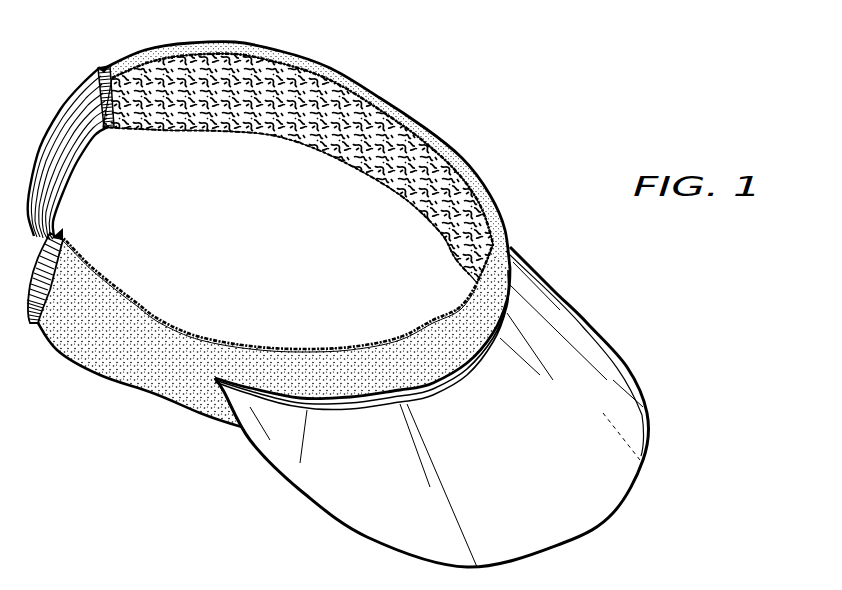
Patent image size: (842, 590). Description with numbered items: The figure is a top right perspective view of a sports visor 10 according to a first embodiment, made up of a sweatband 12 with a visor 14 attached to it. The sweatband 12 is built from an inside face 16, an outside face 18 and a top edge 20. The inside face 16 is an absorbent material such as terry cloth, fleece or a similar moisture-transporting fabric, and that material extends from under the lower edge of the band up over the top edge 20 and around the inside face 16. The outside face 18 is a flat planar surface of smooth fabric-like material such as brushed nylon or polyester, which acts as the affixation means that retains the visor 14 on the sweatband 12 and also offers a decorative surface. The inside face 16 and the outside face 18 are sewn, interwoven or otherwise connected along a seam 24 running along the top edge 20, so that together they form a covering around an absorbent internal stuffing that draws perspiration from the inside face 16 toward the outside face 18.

The sports visor 10 is at (440, 103).
The sweatband 12 is at (490, 205).
The visor 14 is at (617, 343).
The inside face 16 is at (263, 127).
The outside face 18 is at (153, 383).
The top edge 20 is at (197, 57).
The seam 24 is at (300, 347).